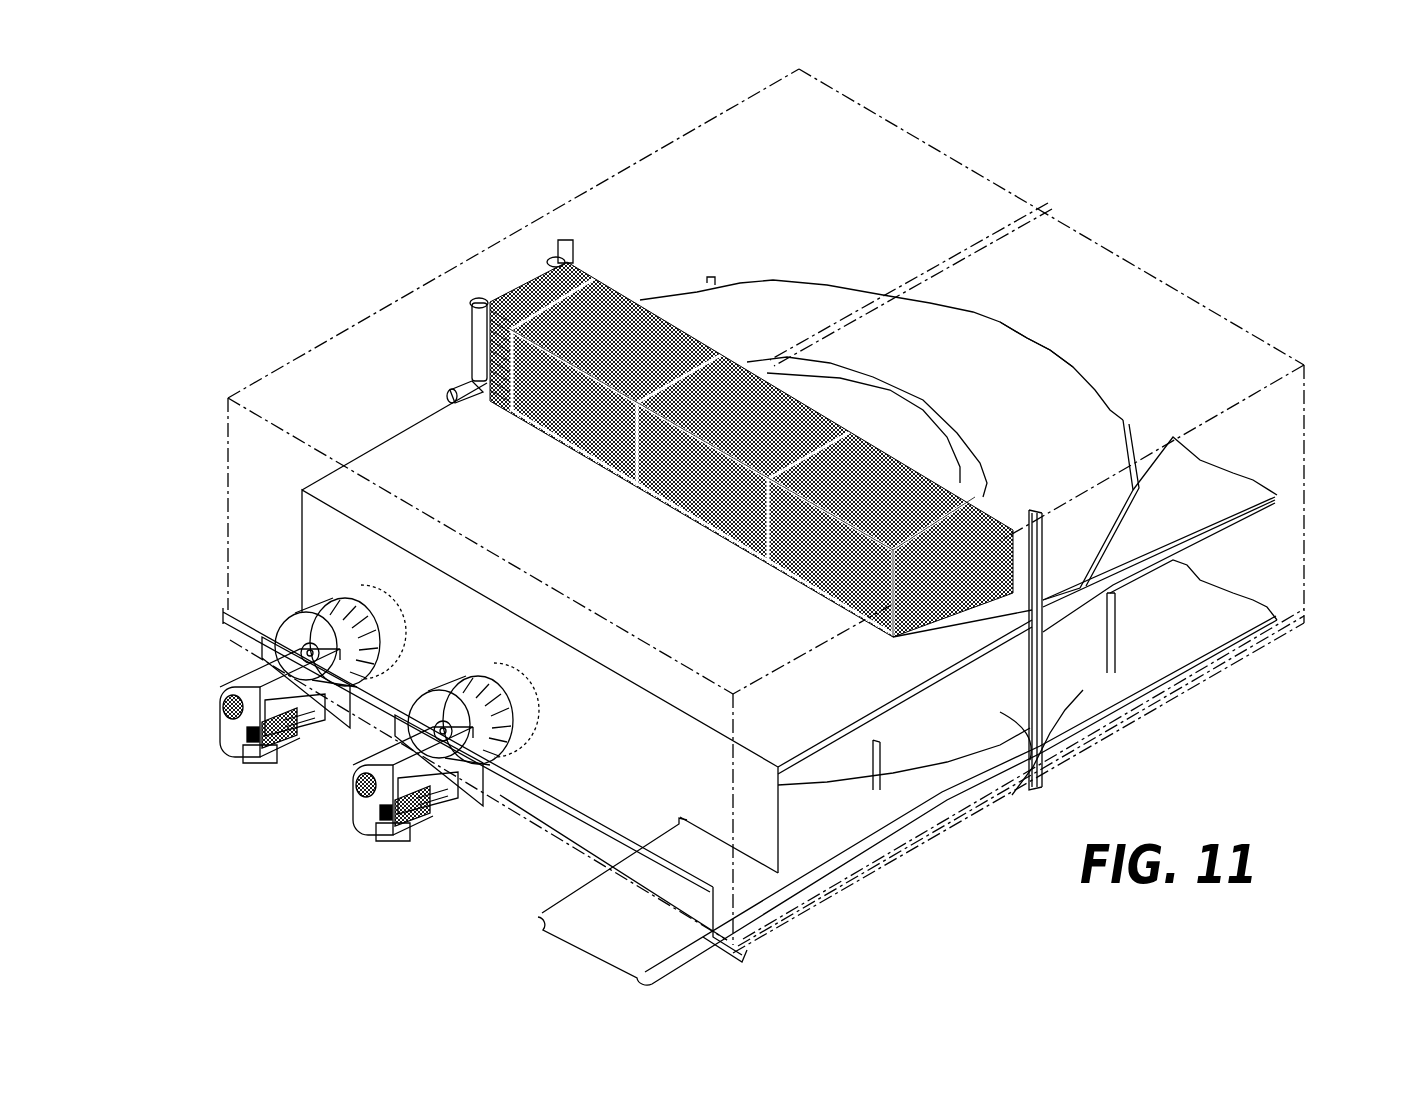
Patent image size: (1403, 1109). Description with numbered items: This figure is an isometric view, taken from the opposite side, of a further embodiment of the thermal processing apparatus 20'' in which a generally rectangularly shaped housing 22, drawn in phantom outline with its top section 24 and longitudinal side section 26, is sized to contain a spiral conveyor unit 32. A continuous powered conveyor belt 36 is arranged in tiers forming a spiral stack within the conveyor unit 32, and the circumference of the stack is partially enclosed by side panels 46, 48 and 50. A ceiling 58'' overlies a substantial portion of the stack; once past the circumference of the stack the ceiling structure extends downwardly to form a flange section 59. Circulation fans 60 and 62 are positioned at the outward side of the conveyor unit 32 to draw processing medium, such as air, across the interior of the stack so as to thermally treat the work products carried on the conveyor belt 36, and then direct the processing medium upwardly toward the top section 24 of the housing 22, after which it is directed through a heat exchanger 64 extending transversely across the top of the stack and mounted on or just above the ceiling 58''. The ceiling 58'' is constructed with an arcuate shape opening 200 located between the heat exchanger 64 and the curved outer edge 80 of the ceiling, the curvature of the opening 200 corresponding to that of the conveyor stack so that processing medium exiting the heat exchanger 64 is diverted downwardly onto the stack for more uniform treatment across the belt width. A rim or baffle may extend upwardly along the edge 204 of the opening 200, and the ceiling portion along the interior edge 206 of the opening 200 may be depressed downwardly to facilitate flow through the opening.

The thermal processing apparatus 20'' is at (355, 201).
The housing 22 is at (643, 153).
The top section 24 is at (735, 120).
The longitudinal side section 26 is at (1263, 555).
The spiral conveyor unit 32 is at (810, 845).
The conveyor belt 36 is at (1247, 505).
The side panel 46 is at (838, 762).
The side panel 48 is at (947, 743).
The side panel 50 is at (1083, 690).
The ceiling 58'' is at (975, 438).
The flange section 59 is at (320, 535).
The circulation fan 60 is at (222, 728).
The circulation fan 62 is at (355, 803).
The heat exchanger 64 is at (528, 280).
The curved outer edge 80 is at (958, 425).
The arcuate shape opening 200 is at (1040, 400).
The edge of the opening 204 is at (958, 400).
The interior edge of the opening 206 is at (830, 377).